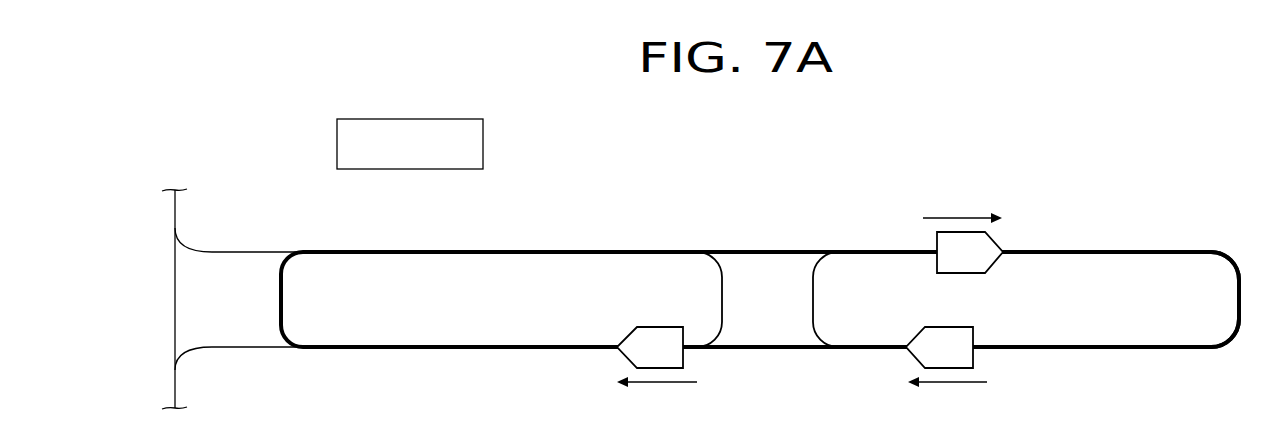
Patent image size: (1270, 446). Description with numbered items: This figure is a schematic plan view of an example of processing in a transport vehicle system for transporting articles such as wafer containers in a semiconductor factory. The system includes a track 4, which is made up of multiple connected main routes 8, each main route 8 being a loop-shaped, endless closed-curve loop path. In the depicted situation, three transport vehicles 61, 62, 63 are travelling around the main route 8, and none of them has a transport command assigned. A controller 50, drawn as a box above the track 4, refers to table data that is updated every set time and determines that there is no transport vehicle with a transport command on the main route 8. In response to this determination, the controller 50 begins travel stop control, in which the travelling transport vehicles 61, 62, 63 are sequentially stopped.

The track 4 is at (255, 243).
The main route 8 is at (1196, 248).
The controller 50 is at (483, 135).
The transport vehicle 61 is at (683, 357).
The transport vehicle 62 is at (936, 239).
The transport vehicle 63 is at (973, 357).